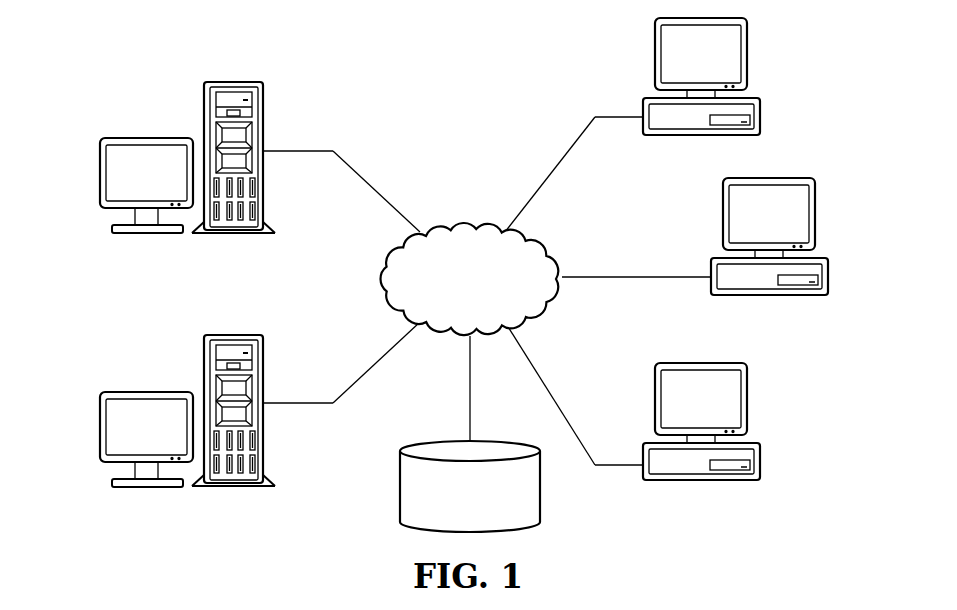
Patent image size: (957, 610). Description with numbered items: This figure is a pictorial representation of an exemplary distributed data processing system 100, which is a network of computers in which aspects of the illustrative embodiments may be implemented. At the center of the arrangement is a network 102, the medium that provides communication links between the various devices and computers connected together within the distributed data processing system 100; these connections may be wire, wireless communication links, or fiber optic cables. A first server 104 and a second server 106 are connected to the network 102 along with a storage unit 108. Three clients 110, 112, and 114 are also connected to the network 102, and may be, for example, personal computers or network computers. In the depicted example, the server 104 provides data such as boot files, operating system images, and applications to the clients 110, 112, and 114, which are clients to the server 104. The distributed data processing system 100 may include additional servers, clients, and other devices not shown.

The distributed data processing system 100 is at (336, 74).
The network 102 is at (440, 222).
The server 104 is at (100, 177).
The server 106 is at (100, 428).
The storage unit 108 is at (400, 483).
The client 110 is at (760, 109).
The client 112 is at (828, 285).
The client 114 is at (760, 470).